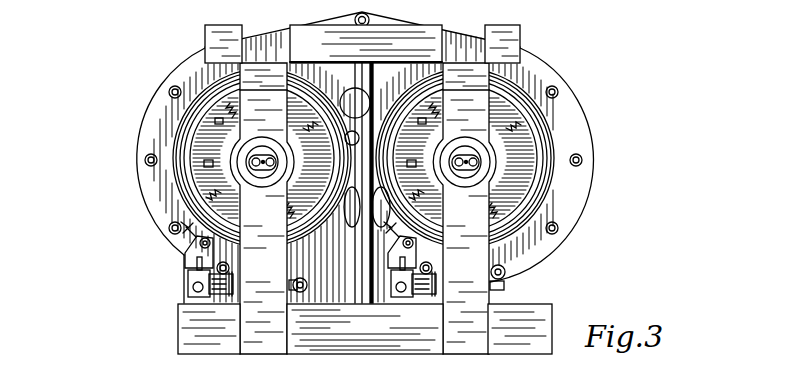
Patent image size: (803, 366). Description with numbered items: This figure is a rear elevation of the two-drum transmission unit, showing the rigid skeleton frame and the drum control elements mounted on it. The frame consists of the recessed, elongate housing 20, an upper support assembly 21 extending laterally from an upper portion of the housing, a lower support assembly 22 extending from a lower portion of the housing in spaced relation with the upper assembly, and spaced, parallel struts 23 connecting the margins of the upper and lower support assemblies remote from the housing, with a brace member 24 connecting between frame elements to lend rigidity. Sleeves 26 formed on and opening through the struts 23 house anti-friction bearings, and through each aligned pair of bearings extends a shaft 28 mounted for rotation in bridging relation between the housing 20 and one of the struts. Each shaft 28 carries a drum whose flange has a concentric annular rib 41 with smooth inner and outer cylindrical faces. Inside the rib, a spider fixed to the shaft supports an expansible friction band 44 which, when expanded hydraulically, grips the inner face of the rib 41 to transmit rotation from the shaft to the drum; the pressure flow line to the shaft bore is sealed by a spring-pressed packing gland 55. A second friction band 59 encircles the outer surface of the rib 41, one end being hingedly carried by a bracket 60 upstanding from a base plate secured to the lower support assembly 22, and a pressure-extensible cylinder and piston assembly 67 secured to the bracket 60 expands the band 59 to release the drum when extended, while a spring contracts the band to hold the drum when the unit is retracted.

The housing 20 is at (561, 82).
The upper support assembly 21 is at (366, 44).
The lower support assembly 22 is at (365, 329).
The struts 23 is at (363, 208).
The brace member 24 is at (367, 106).
The sleeves 26 is at (220, 157).
The shaft 28 is at (266, 150).
The rib 41 is at (187, 178).
The friction band 44 is at (203, 196).
The packing gland 55 is at (363, 177).
The friction band 59 is at (198, 98).
The bracket 60 is at (190, 258).
The cylinder and piston assembly 67 is at (218, 297).